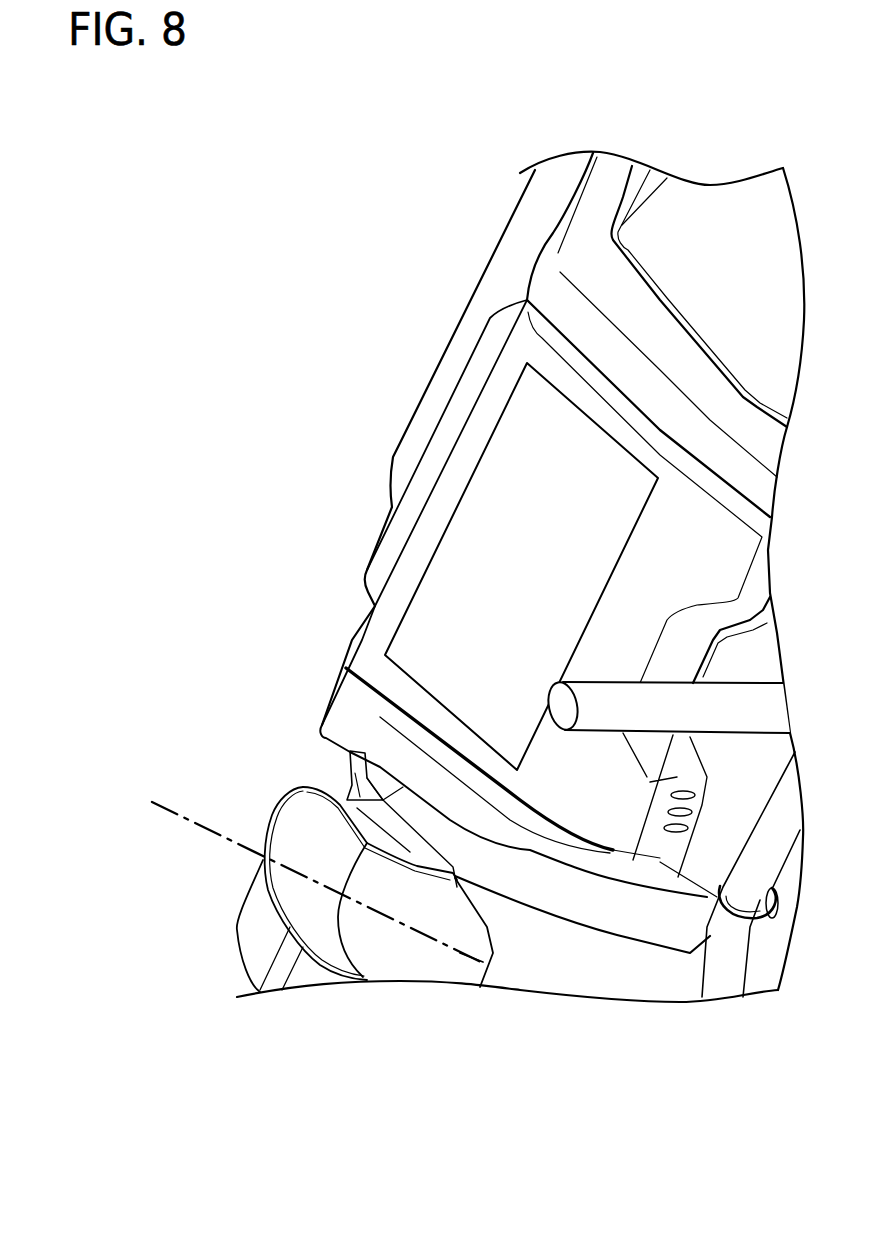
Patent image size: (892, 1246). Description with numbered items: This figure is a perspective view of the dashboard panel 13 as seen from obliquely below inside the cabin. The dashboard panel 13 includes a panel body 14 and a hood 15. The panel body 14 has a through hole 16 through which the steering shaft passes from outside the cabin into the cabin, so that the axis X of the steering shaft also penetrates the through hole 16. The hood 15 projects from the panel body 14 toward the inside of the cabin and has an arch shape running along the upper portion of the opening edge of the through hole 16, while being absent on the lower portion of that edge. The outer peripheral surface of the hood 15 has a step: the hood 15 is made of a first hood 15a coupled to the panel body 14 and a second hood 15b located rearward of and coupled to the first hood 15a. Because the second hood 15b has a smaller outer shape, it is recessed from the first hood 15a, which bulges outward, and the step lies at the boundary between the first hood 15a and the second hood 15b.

The dashboard panel 13 is at (327, 443).
The panel body 14 is at (590, 963).
The hood 15 is at (307, 801).
The first hood 15a is at (350, 774).
The second hood 15b is at (283, 797).
The through hole 16 is at (402, 963).
The axis X is at (193, 823).